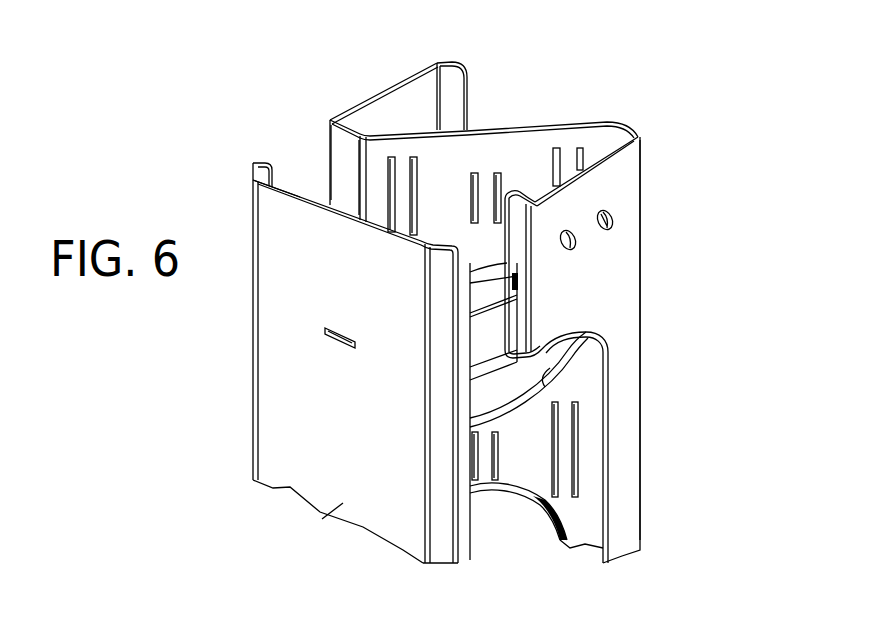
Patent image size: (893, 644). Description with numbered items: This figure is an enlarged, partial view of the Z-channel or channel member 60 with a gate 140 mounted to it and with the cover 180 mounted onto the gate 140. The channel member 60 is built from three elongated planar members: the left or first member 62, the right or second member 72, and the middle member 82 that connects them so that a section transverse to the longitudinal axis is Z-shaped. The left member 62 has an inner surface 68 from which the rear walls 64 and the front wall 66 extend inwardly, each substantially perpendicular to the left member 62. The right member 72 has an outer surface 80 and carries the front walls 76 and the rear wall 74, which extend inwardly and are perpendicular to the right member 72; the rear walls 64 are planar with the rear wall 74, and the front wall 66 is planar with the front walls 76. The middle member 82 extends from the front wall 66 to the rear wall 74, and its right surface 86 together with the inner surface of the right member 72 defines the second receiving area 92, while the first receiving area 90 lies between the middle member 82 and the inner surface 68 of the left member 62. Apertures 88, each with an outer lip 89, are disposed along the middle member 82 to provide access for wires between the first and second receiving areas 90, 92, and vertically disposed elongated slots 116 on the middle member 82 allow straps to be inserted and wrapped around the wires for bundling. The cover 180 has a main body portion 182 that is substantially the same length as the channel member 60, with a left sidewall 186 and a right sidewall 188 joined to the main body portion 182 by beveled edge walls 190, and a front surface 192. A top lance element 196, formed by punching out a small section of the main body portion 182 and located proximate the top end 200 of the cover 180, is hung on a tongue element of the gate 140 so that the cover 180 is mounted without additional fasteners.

The channel member 60 is at (662, 155).
The left member 62 is at (352, 107).
The rear wall 64 is at (455, 63).
The front wall 66 is at (340, 165).
The inner surface 68 is at (420, 92).
The right member 72 is at (641, 197).
The rear wall 74 is at (620, 127).
The front wall 76 is at (515, 243).
The outer surface 80 is at (630, 258).
The middle member 82 is at (563, 120).
The right surface 86 is at (488, 152).
The aperture 88 is at (555, 378).
The outer lip 89 is at (560, 387).
The first receiving area 90 is at (397, 112).
The second receiving area 92 is at (527, 150).
The elongated slot 116 is at (580, 437).
The gate 140 is at (498, 324).
The cover 180 is at (578, 241).
The main body portion 182 is at (327, 517).
The left sidewall 186 is at (260, 156).
The right sidewall 188 is at (463, 538).
The beveled edge wall 190 is at (440, 552).
The front surface 192 is at (273, 360).
The top lance element 196 is at (326, 338).
The top end 200 is at (252, 167).